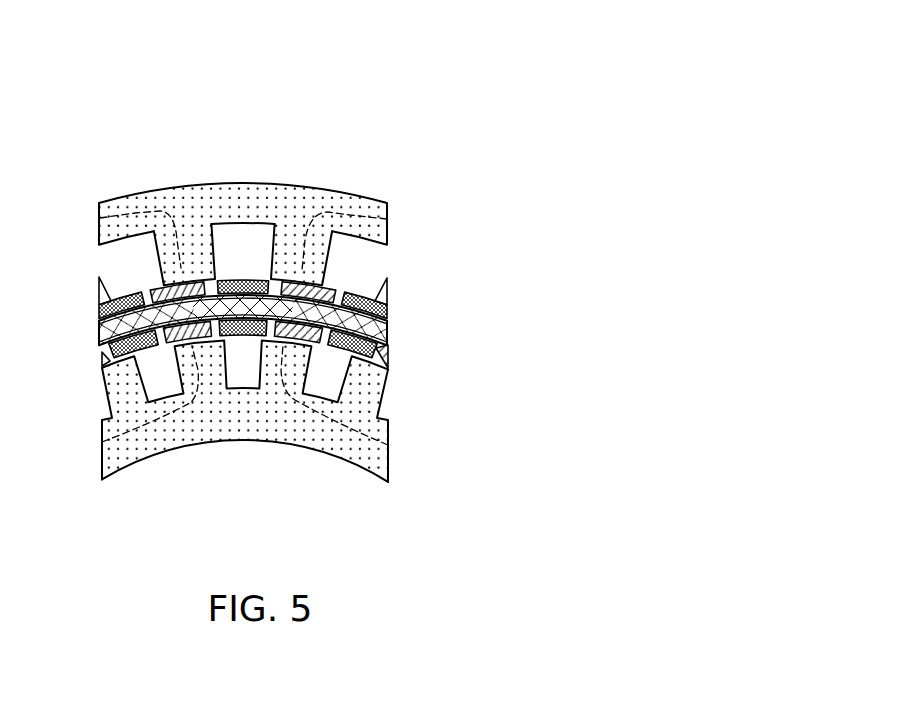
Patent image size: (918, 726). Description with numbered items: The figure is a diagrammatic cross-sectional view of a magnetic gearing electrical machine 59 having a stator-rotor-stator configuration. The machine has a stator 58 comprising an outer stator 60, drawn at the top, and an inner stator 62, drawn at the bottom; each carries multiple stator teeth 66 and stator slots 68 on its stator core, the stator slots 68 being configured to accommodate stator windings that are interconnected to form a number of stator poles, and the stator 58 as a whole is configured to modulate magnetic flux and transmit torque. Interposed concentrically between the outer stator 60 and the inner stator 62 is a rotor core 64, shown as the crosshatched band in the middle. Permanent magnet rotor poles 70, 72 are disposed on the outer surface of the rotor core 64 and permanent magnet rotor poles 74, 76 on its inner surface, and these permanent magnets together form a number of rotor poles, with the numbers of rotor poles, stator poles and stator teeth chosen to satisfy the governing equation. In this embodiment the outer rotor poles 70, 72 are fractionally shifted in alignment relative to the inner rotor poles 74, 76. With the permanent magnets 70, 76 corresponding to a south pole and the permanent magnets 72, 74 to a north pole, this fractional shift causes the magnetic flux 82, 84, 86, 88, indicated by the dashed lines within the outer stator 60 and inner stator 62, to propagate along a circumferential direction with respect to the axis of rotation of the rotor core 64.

The stator 58 is at (388, 231).
The magnetic gearing electrical machine 59 is at (503, 88).
The outer stator 60 is at (388, 212).
The inner stator 62 is at (388, 483).
The rotor core 64 is at (272, 309).
The stator teeth 66 is at (289, 252).
The stator slots 68 is at (260, 242).
The rotor pole 70 is at (178, 283).
The rotor pole 72 is at (241, 282).
The rotor pole 74 is at (248, 336).
The rotor pole 76 is at (210, 337).
The magnetic flux 82 is at (177, 257).
The magnetic flux 84 is at (102, 440).
The magnetic flux 86 is at (303, 270).
The magnetic flux 88 is at (388, 440).